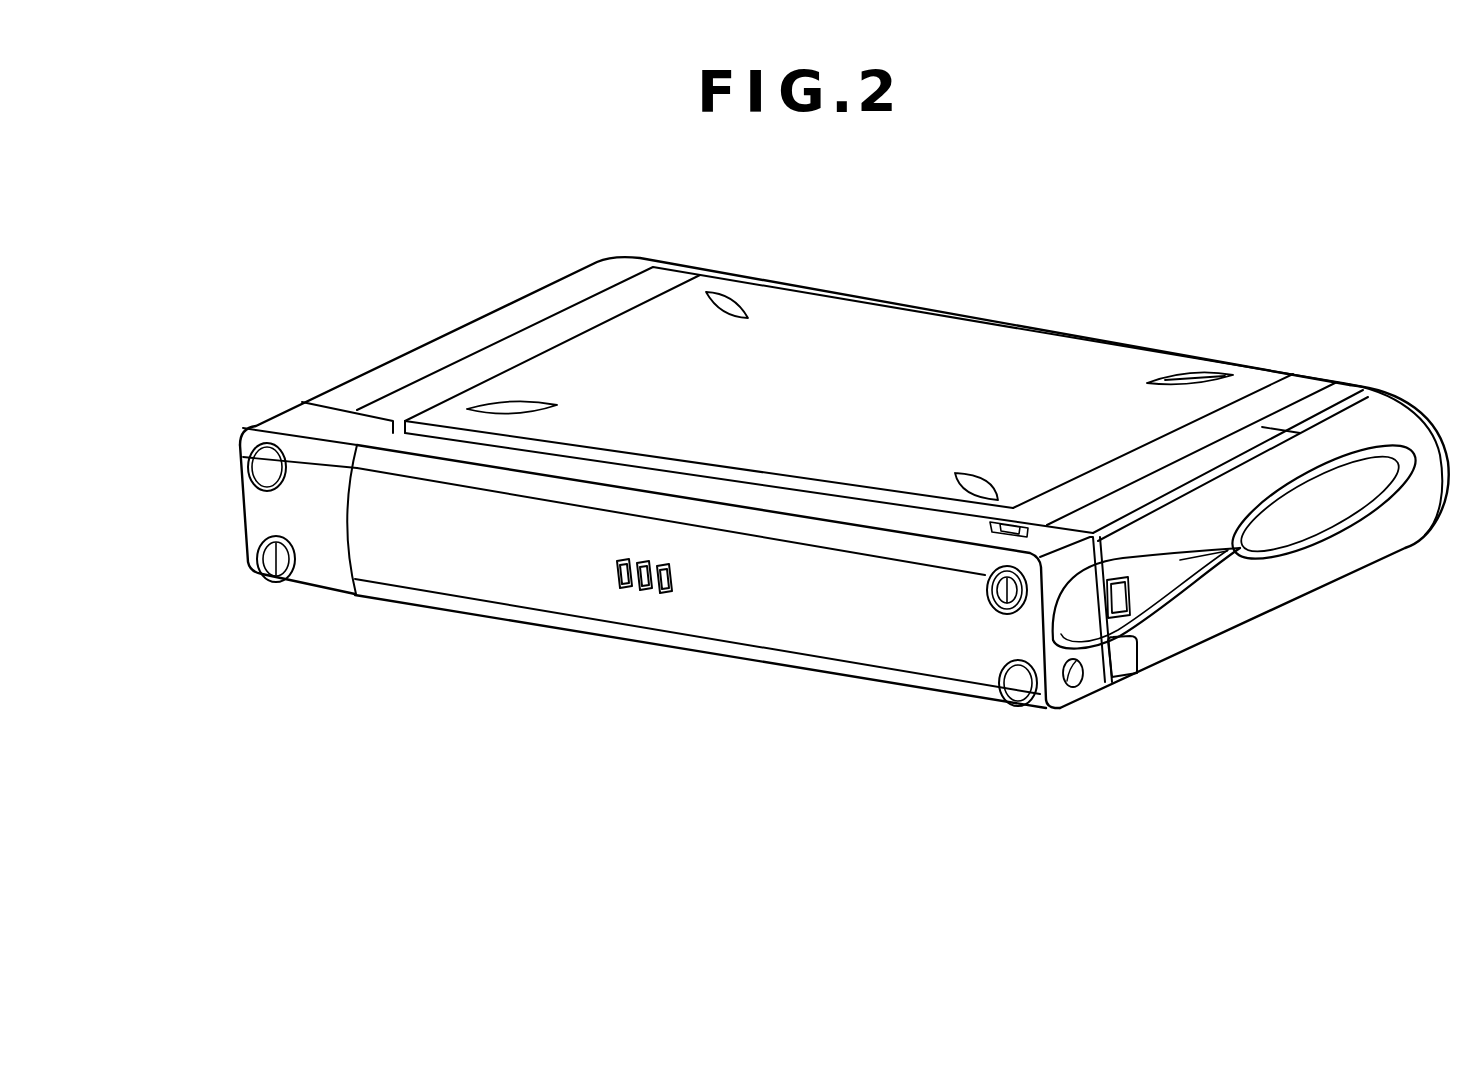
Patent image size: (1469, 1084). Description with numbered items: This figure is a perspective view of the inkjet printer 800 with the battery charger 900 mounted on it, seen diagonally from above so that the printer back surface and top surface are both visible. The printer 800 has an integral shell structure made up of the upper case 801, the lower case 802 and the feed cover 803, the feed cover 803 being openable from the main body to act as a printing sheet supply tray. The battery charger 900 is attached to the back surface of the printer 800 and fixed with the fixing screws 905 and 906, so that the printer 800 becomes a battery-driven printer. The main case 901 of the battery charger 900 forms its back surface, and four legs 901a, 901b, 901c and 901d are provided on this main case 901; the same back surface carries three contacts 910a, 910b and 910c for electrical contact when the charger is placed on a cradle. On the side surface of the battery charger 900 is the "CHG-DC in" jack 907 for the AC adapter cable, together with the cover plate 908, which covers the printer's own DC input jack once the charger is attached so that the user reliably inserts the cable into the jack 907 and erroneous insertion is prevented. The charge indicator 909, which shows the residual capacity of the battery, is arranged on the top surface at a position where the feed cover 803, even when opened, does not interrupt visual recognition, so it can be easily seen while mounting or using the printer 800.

The printer 800 is at (603, 262).
The upper case 801 is at (1370, 430).
The lower case 802 is at (1378, 545).
The feed cover 803 is at (866, 330).
The battery charger 900 is at (274, 414).
The main case 901 is at (473, 580).
The leg 901a is at (1007, 614).
The leg 901b is at (1018, 708).
The leg 901c is at (263, 473).
The leg 901d is at (279, 580).
The fixing screw 905 is at (998, 605).
The fixing screw 906 is at (266, 577).
The "CHG-DC in" jack 907 is at (1073, 689).
The cover plate 908 is at (1122, 658).
The charge indicator 909 is at (1013, 508).
The contact 910a is at (667, 595).
The contact 910b is at (645, 592).
The contact 910c is at (623, 590).